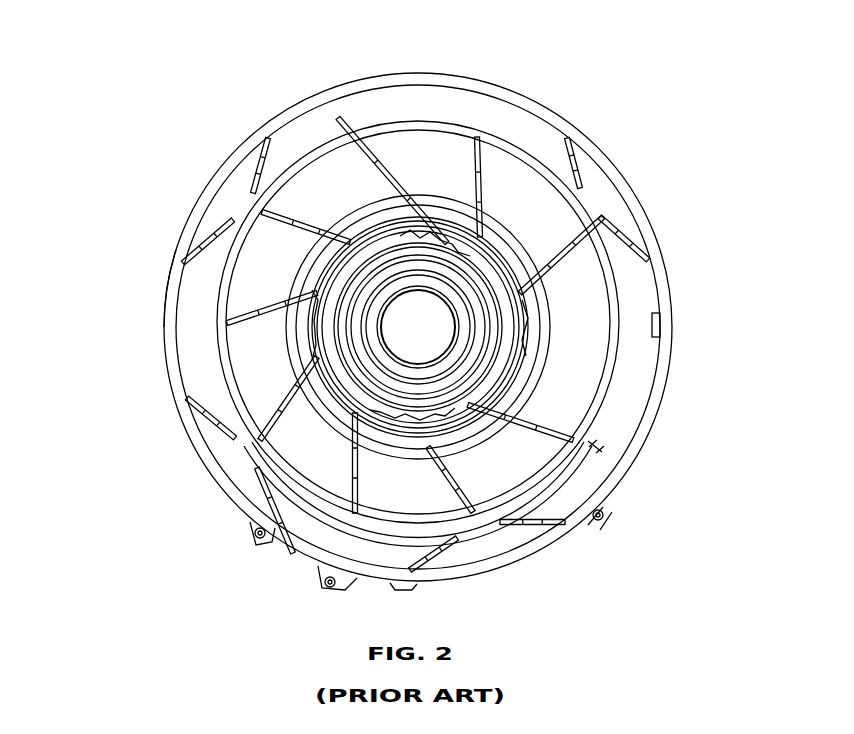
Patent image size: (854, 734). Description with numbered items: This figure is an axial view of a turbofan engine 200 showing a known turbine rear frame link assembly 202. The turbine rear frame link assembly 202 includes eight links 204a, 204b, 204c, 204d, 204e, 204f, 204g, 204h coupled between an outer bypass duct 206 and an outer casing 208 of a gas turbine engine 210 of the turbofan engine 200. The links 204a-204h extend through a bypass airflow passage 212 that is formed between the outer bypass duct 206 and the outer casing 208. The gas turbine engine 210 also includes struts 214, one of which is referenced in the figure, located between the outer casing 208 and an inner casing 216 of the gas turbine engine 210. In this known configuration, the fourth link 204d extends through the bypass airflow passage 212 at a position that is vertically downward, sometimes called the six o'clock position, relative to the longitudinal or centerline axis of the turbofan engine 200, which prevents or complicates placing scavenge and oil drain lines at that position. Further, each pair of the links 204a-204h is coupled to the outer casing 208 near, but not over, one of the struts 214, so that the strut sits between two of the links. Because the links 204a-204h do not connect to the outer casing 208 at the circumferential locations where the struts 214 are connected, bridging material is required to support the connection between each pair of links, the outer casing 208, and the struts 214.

The turbofan engine 200 is at (130, 124).
The turbine rear frame link assembly 202 is at (145, 227).
The first link 204a is at (578, 167).
The second link 204b is at (630, 233).
The third link 204c is at (543, 527).
The fourth link 204d is at (447, 557).
The fifth link 204e is at (263, 500).
The sixth link 204f is at (188, 415).
The seventh link 204g is at (207, 235).
The eighth link 204h is at (257, 160).
The outer bypass duct 206 is at (373, 85).
The outer casing 208 is at (447, 130).
The gas turbine engine 210 is at (321, 114).
The bypass airflow passage 212 is at (178, 288).
The strut 214 is at (302, 395).
The inner casing 216 is at (492, 257).